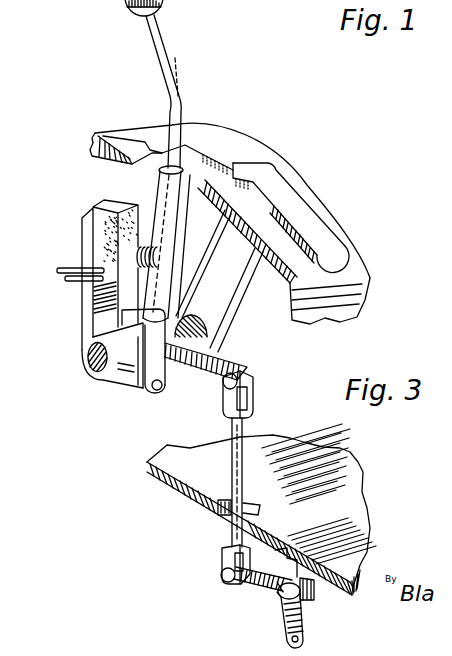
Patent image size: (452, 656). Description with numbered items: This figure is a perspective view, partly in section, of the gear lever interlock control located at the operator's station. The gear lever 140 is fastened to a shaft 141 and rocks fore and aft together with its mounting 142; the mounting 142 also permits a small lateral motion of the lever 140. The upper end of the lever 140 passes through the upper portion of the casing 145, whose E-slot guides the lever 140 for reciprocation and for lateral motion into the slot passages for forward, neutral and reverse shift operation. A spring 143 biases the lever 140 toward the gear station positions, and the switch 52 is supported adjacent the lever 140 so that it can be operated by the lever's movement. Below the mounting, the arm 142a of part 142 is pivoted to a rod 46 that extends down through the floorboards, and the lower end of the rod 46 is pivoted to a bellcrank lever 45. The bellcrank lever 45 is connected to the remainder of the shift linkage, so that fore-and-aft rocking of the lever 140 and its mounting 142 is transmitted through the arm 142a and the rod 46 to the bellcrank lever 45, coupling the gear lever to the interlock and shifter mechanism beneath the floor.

The gear lever 140 is at (172, 60).
The spring 143 is at (170, 272).
The casing 145 is at (367, 265).
The switch 52 is at (104, 205).
The shaft 141 is at (86, 360).
The mounting 142 is at (163, 384).
The arm 142a is at (240, 370).
The rod 46 is at (232, 532).
The bellcrank lever 45 is at (301, 608).